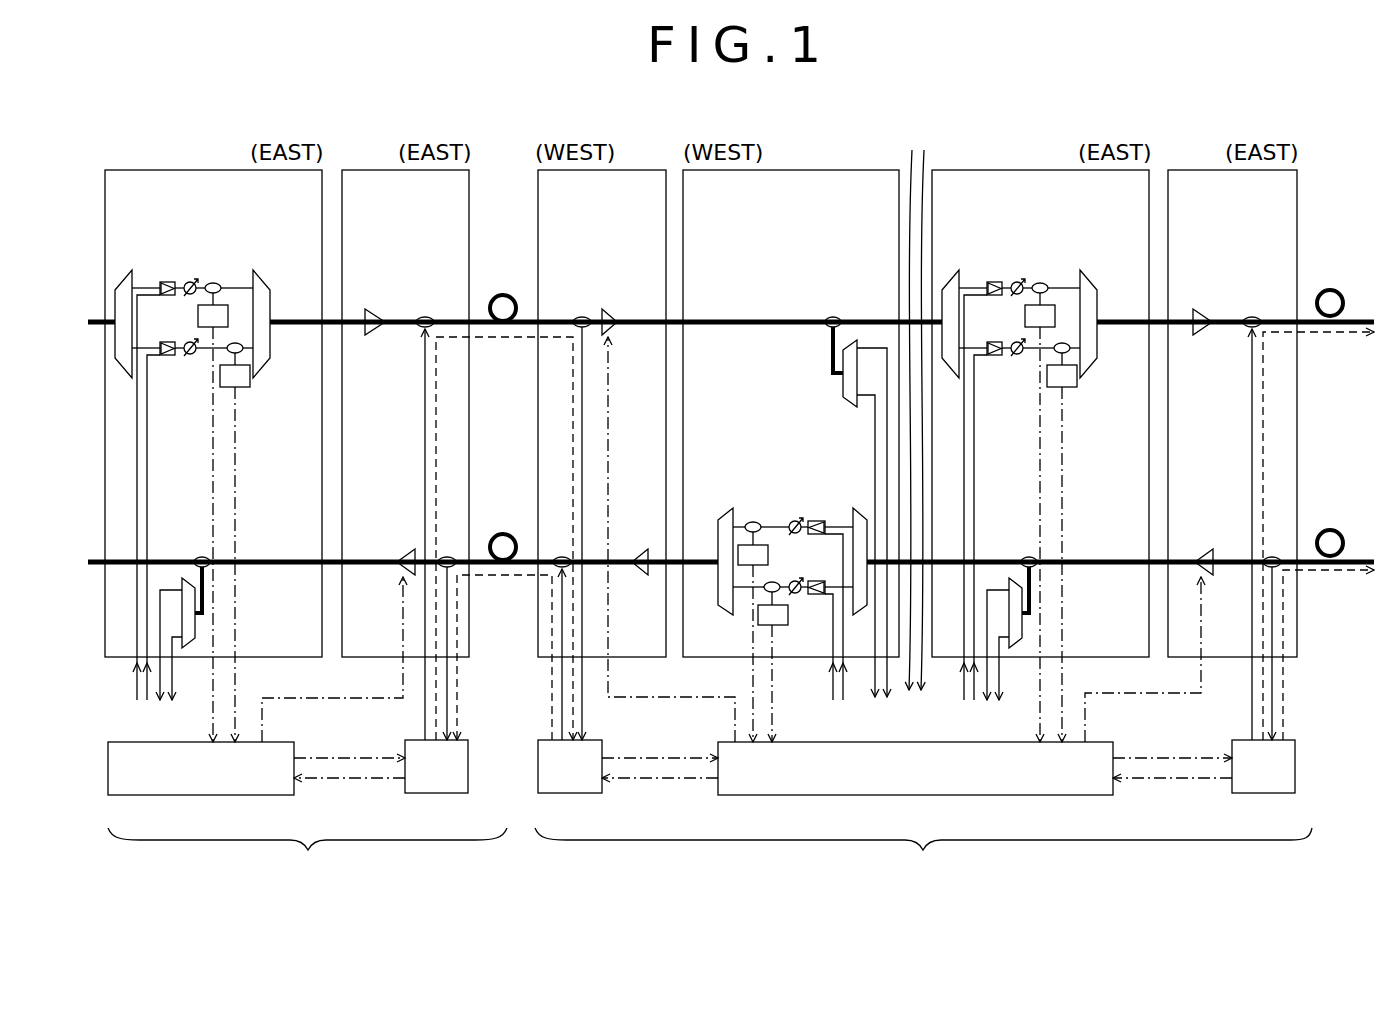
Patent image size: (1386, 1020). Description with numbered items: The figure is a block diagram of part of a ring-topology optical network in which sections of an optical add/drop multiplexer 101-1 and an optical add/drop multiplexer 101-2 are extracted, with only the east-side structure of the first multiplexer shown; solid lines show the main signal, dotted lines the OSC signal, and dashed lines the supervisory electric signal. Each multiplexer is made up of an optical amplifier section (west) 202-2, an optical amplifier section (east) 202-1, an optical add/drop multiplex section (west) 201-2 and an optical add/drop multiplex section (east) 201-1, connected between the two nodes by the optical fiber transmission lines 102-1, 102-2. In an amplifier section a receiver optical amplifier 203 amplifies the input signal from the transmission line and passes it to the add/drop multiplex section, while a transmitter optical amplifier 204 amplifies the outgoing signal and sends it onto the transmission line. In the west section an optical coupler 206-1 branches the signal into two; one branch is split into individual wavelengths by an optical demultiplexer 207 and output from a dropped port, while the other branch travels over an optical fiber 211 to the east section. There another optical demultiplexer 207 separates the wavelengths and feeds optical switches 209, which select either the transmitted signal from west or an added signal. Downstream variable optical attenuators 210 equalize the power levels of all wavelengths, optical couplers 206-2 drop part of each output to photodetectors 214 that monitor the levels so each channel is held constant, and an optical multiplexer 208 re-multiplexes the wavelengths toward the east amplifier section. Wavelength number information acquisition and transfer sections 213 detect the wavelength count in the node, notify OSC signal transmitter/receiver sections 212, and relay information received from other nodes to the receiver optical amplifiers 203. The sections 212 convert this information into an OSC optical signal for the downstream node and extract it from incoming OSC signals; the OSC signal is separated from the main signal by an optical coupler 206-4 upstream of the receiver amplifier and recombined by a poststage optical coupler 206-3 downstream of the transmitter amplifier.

The optical add/drop multiplexer 101-1 is at (307, 852).
The optical add/drop multiplexer 101-2 is at (923, 852).
The optical fiber transmission line 102-1 is at (500, 296).
The optical fiber transmission line 102-2 is at (503, 560).
The optical add/drop multiplex section (east) 201-1 is at (207, 170).
The optical add/drop multiplex section (west) 201-2 is at (788, 170).
The optical amplifier section (east) 202-1 is at (383, 170).
The optical amplifier section (west) 202-2 is at (630, 170).
The receiver optical amplifier 203 is at (609, 310).
The transmitter optical amplifier 204 is at (372, 310).
The optical coupler 206-1 is at (205, 557).
The optical coupler 206-2 is at (237, 342).
The optical coupler 206-3 is at (420, 328).
The optical coupler 206-4 is at (582, 316).
The optical demultiplexer 207 is at (122, 272).
The optical multiplexer 208 is at (262, 272).
The optical switch 209 is at (168, 357).
The variable optical attenuator 210 is at (188, 280).
The optical fiber 211 is at (921, 405).
The OSC signal transmitter/receiver section 212 is at (437, 793).
The wavelength number information acquisition and transfer section 213 is at (237, 795).
The photodetector 214 is at (250, 387).